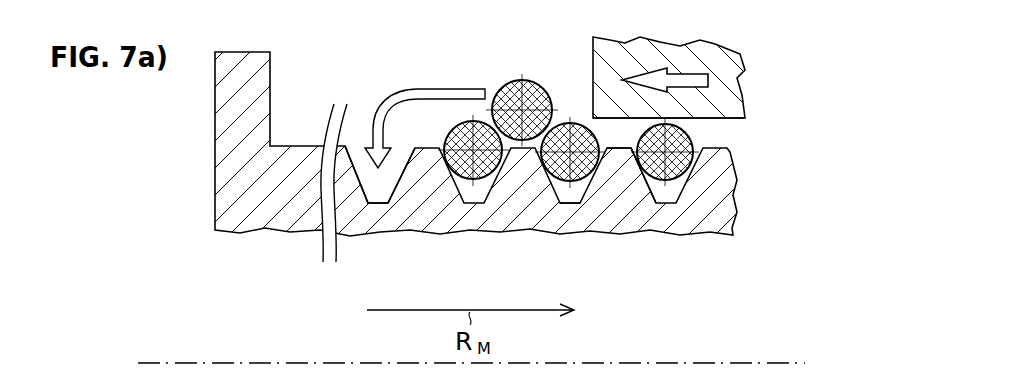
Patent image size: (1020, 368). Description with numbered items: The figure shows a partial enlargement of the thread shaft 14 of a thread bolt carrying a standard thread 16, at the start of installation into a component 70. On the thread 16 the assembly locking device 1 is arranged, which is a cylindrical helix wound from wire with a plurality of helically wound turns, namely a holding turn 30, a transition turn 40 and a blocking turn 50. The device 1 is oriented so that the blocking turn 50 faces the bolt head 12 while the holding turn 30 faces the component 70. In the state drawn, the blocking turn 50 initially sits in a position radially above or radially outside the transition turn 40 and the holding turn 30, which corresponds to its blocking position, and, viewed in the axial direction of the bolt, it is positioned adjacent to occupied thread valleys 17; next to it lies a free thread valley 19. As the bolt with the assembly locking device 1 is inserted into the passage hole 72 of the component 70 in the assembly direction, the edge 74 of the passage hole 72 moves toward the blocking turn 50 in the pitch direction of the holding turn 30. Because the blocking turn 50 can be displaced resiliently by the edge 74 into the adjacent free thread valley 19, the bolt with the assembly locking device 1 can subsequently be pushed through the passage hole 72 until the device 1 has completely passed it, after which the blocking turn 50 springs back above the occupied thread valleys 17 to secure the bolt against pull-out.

The assembly locking device 1 is at (495, 91).
The bolt head 12 is at (267, 195).
The thread shaft 14 is at (517, 210).
The standard thread 16 is at (617, 175).
The occupied thread valleys 17 is at (578, 197).
The free thread valley 19 is at (375, 195).
The holding turn 30 is at (685, 177).
The transition turn 40 is at (445, 188).
The blocking turn 50 is at (517, 84).
The component 70 is at (723, 70).
The passage hole 72 is at (712, 132).
The edge 74 is at (593, 117).